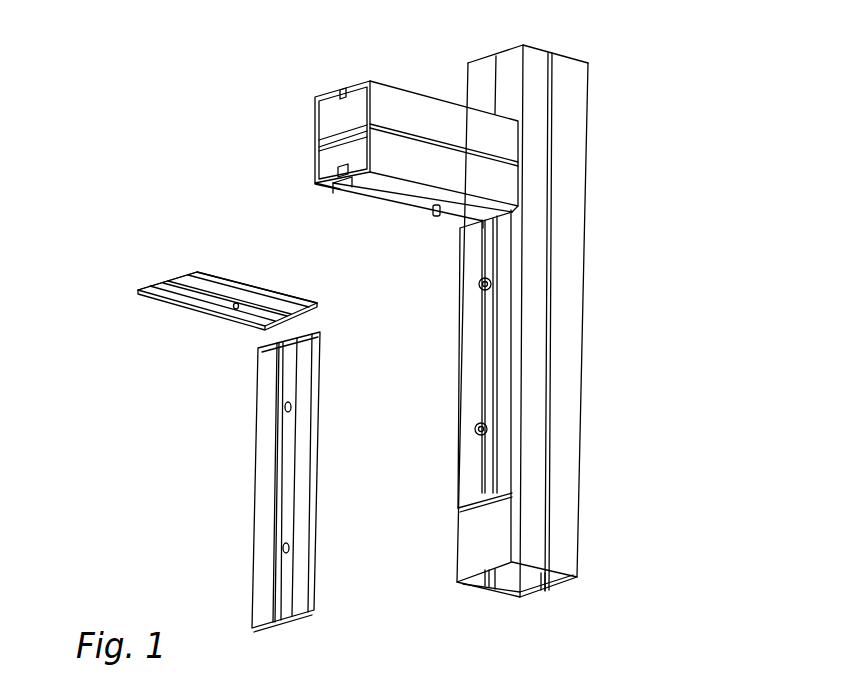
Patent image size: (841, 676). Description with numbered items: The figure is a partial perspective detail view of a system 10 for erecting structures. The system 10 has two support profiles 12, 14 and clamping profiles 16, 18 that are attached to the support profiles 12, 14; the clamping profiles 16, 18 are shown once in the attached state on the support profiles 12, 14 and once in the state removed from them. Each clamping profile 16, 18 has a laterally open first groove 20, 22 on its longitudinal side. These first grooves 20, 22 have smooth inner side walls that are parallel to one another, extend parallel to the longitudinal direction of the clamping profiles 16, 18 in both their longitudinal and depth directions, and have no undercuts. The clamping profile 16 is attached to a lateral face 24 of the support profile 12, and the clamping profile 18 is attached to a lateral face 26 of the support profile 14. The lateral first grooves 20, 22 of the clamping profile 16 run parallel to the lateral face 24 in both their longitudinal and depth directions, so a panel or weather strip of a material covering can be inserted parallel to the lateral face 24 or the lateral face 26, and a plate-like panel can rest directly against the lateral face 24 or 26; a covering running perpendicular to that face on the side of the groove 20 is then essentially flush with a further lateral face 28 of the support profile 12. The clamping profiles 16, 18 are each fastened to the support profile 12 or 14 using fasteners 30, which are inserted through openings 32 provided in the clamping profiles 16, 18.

The system 10 is at (656, 200).
The support profile 12 is at (590, 368).
The support profile 14 is at (391, 76).
The clamping profile 16 is at (260, 502).
The clamping profile 18 is at (228, 312).
The first groove 20 is at (204, 274).
The first groove 22 is at (137, 292).
The lateral face 24 is at (498, 552).
The lateral face 26 is at (334, 181).
The further lateral face 28 is at (558, 557).
The fastener 30 is at (436, 218).
The opening 32 is at (237, 310).